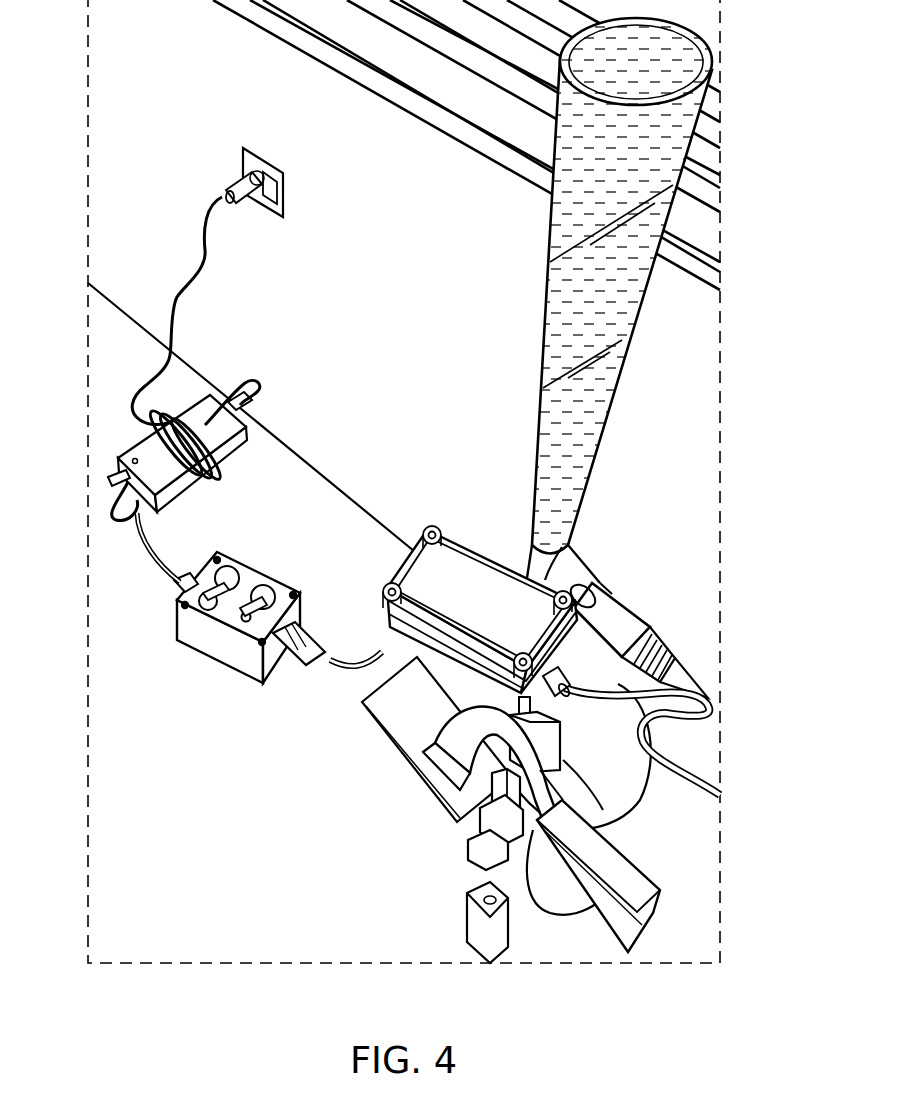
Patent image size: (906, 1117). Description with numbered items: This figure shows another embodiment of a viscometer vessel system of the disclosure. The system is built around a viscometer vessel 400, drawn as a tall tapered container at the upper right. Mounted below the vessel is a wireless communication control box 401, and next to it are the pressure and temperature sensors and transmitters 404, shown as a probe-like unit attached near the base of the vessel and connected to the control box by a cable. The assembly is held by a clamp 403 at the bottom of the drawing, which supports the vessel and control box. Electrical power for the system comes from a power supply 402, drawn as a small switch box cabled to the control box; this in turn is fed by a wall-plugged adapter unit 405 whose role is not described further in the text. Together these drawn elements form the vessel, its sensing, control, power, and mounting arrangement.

The viscometer vessel 400 is at (665, 147).
The wireless communication control box 401 is at (465, 575).
The power supply 402 is at (175, 625).
The clamp 403 is at (487, 785).
The pressure and temperature sensors and transmitters 404 is at (628, 620).
The power adapter 405 is at (147, 463).